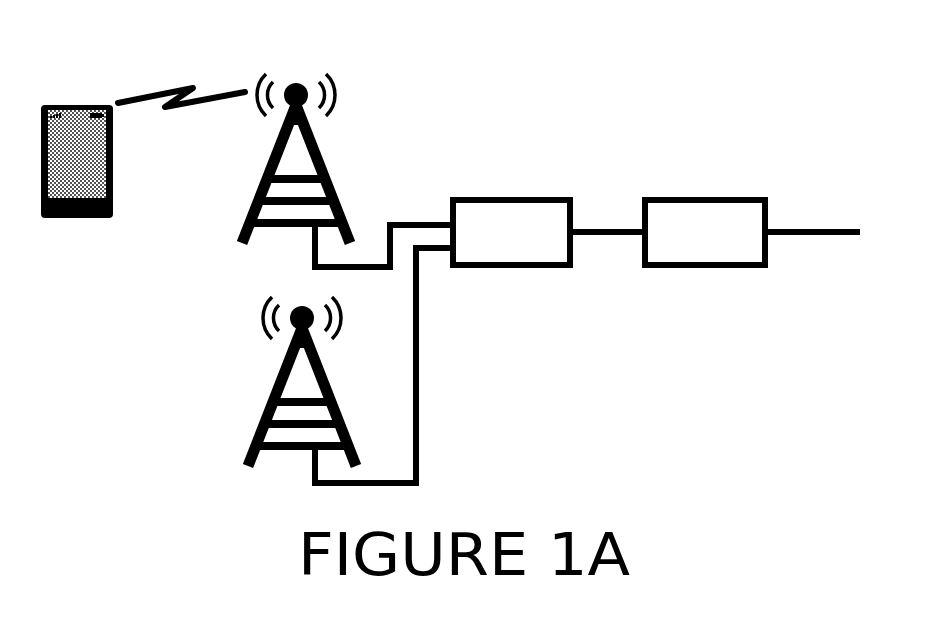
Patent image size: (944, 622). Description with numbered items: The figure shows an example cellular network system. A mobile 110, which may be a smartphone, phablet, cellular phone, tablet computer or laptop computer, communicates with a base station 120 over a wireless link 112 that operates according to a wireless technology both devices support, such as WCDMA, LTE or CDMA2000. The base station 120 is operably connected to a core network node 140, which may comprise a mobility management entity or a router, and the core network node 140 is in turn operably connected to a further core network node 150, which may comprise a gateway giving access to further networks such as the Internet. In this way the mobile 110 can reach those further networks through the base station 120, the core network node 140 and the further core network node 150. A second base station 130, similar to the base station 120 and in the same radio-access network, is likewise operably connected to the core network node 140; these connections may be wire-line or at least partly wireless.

The mobile 110 is at (65, 218).
The wireless link 112 is at (184, 88).
The base station 120 is at (245, 228).
The base station 130 is at (255, 455).
The core network node 140 is at (511, 232).
The further core network node 150 is at (705, 232).